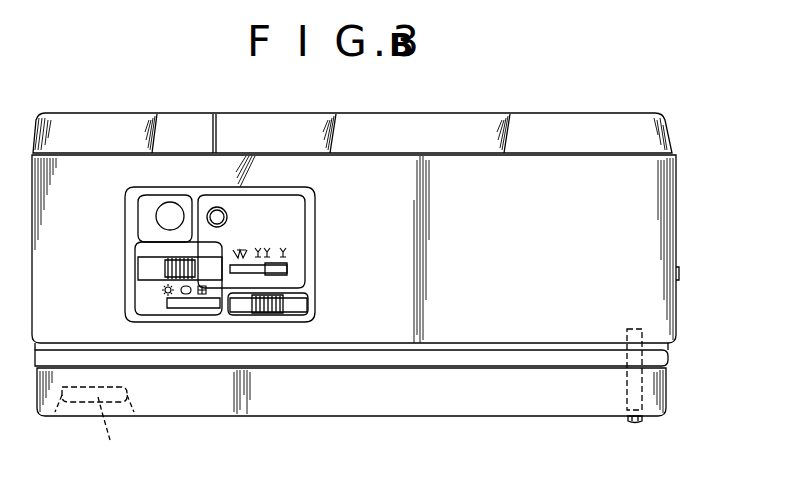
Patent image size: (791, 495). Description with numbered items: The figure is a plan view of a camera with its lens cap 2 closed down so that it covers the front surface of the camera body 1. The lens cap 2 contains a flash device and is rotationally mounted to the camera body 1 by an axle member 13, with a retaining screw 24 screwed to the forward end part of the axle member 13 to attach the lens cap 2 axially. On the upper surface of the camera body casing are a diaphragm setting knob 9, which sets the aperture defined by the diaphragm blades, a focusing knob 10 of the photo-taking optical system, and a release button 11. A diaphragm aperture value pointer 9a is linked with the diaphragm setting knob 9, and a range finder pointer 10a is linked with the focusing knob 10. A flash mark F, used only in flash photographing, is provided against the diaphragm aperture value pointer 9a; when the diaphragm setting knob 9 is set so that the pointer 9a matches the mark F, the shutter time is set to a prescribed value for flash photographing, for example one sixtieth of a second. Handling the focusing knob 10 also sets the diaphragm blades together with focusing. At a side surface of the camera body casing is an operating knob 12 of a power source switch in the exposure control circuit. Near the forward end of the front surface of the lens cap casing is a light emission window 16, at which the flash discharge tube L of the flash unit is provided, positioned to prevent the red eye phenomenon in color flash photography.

The camera body 1 is at (498, 241).
The lens cap 2 is at (297, 411).
The diaphragm setting knob 9 is at (308, 305).
The diaphragm aperture value pointer 9a is at (192, 298).
The focusing knob 10 is at (138, 268).
The range finder pointer 10a is at (292, 268).
The release button 11 is at (170, 203).
The operating knob of power source switch 12 is at (679, 275).
The axle member 13 is at (643, 362).
The light emission window 16 is at (77, 418).
The retaining screw 24 is at (636, 424).
The flash mark F is at (215, 288).
The flash discharge tube L is at (108, 434).